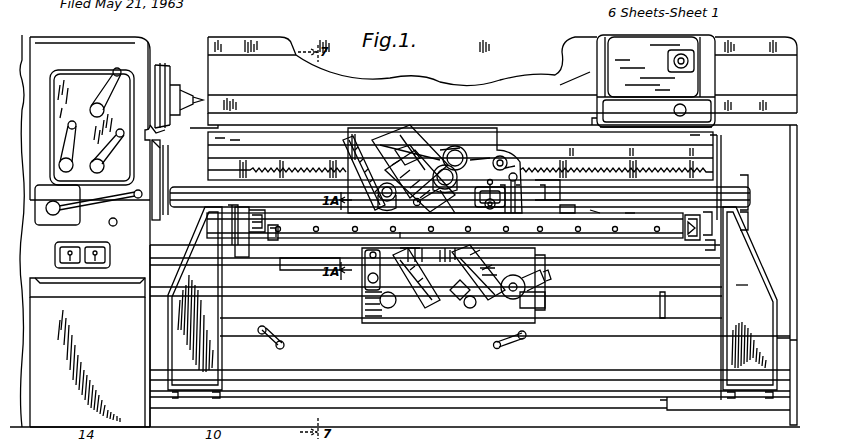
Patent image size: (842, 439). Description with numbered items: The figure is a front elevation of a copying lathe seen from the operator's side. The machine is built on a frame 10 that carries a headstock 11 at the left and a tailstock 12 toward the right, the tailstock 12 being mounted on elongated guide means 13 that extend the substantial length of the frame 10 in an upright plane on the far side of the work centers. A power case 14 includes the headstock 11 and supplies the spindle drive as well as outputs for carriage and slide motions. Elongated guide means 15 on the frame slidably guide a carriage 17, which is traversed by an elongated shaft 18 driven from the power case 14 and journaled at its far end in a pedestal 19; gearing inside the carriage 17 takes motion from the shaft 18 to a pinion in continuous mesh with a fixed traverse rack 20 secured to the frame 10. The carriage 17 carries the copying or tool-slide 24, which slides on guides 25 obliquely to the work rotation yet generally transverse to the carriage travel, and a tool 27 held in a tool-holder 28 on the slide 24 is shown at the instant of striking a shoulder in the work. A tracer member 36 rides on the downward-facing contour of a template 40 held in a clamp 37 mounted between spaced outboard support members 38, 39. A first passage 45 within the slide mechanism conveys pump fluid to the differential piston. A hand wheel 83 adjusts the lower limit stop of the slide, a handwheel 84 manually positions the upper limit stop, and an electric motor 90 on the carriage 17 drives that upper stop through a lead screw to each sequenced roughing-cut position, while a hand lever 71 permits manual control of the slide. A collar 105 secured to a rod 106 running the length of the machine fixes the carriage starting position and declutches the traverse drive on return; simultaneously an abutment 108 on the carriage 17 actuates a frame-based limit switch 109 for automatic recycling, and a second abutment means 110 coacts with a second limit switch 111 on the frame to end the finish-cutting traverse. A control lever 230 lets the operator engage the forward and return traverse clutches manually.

The frame 10 is at (190, 42).
The headstock 11 is at (170, 62).
The tailstock 12 is at (630, 45).
The elongated guide means 13 is at (585, 48).
The power case 14 is at (99, 27).
The elongated guide means 15 is at (300, 280).
The carriage 17 is at (393, 322).
The elongated shaft 18 is at (182, 195).
The pedestal 19 is at (790, 284).
The traverse rack 20 is at (255, 172).
The tool-slide 24 is at (405, 161).
The guides 25 is at (345, 142).
The tool 27 is at (395, 160).
The tool-holder 28 is at (435, 150).
The follower or tracer member 36 is at (456, 322).
The template-supporting means or clamp 37 is at (634, 232).
The outboard support member 38 is at (180, 300).
The outboard support member 39 is at (742, 277).
The template 40 is at (265, 268).
The first passage 45 is at (638, 284).
The hand lever 71 is at (404, 220).
The hand wheel 83 is at (388, 218).
The handwheel 84 is at (492, 184).
The electric motor 90 is at (521, 273).
The collar 105 is at (597, 215).
The rod 106 is at (632, 227).
The abutment 108 is at (548, 300).
The limit switch 109 is at (520, 340).
The second abutment means 110 is at (414, 325).
The second limit switch 111 is at (288, 342).
The control lever 230 is at (535, 188).